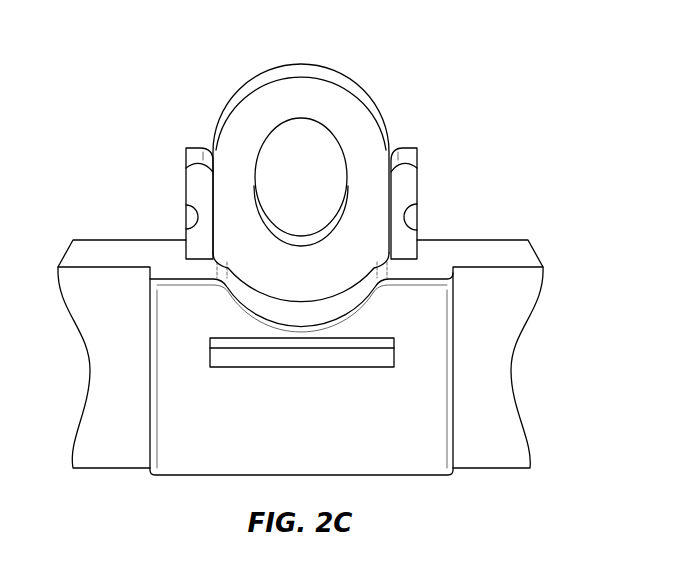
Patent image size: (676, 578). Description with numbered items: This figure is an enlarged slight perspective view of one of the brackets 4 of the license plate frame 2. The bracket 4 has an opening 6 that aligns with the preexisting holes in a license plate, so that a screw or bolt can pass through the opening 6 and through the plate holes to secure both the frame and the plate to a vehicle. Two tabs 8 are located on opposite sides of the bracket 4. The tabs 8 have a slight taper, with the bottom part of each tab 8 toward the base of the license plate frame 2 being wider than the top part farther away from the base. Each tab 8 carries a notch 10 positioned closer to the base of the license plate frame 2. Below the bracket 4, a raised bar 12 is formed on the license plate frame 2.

The license plate frame 2 is at (87, 250).
The bracket 4 is at (382, 164).
The opening 6 is at (292, 192).
The tab 8 is at (190, 150).
The notch 10 is at (188, 215).
The raised bar 12 is at (262, 368).